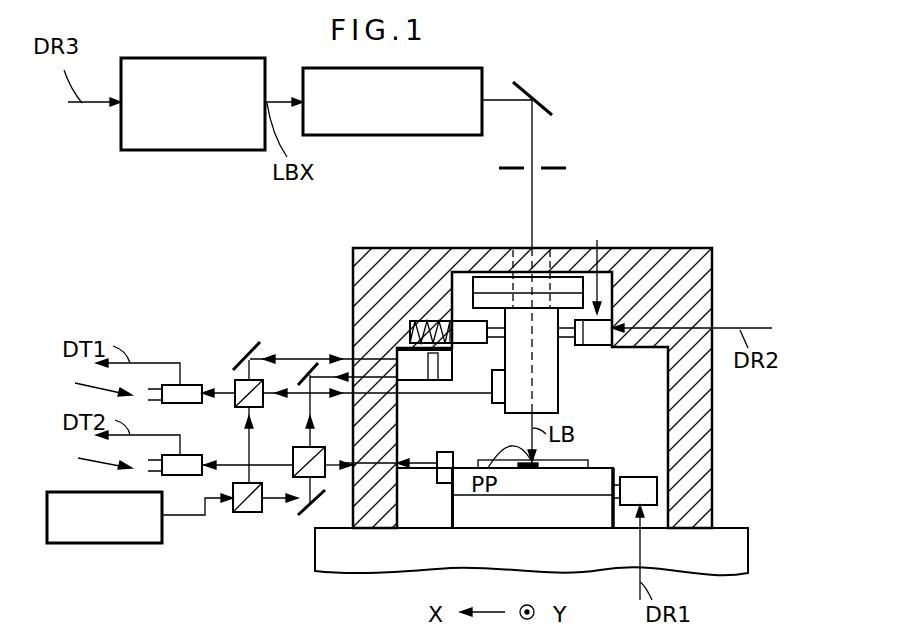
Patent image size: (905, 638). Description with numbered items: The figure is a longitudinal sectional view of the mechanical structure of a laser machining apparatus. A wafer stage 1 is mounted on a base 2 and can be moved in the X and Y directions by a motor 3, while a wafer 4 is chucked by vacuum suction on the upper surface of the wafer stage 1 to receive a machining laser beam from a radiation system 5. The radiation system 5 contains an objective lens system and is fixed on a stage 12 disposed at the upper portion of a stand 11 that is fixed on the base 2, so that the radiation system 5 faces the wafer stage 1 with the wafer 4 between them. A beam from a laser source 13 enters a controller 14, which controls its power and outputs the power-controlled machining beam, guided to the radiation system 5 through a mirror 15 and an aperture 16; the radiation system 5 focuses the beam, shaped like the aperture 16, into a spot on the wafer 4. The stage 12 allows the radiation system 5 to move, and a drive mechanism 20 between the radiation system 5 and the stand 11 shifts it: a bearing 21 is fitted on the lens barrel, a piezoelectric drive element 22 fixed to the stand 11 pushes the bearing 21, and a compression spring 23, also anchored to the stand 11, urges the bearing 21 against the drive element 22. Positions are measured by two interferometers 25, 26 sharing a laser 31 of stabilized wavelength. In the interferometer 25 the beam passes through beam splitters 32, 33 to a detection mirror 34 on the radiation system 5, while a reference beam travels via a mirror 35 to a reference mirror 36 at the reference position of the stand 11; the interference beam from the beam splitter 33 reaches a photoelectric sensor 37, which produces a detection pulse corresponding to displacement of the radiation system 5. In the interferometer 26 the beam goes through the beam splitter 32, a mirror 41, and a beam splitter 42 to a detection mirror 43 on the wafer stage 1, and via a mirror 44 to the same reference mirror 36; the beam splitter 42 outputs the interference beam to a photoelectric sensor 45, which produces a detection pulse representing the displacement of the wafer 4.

The wafer stage 1 is at (616, 465).
The base 2 is at (748, 548).
The motor 3 is at (657, 492).
The wafer 4 is at (590, 461).
The radiation system 5 is at (560, 393).
The stand 11 is at (712, 412).
The stage 12 is at (497, 285).
The laser source 13 is at (200, 148).
The controller 14 is at (364, 128).
The mirror 15 is at (547, 108).
The aperture 16 is at (566, 166).
The drive mechanism 20 is at (599, 263).
The bearing 21 is at (566, 338).
The drive element 22 is at (595, 345).
The compression spring 23 is at (416, 330).
The interferometer 25 is at (86, 384).
The interferometer 26 is at (86, 466).
The laser 31 is at (145, 537).
The beam splitter 32 is at (243, 512).
The beam splitter 33 is at (255, 407).
The detection mirror 34 is at (497, 404).
The mirror 35 is at (236, 355).
The reference mirror 36 is at (432, 382).
The photoelectric sensor 37 is at (187, 392).
The mirror 41 is at (305, 520).
The beam splitter 42 is at (313, 447).
The detection mirror 43 is at (437, 470).
The mirror 44 is at (305, 362).
The photoelectric sensor 45 is at (192, 462).